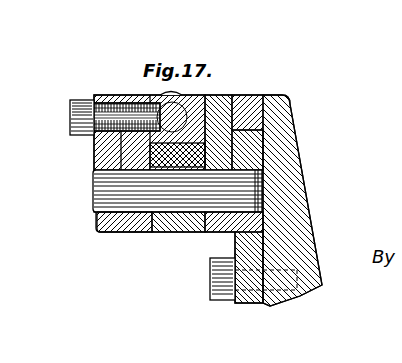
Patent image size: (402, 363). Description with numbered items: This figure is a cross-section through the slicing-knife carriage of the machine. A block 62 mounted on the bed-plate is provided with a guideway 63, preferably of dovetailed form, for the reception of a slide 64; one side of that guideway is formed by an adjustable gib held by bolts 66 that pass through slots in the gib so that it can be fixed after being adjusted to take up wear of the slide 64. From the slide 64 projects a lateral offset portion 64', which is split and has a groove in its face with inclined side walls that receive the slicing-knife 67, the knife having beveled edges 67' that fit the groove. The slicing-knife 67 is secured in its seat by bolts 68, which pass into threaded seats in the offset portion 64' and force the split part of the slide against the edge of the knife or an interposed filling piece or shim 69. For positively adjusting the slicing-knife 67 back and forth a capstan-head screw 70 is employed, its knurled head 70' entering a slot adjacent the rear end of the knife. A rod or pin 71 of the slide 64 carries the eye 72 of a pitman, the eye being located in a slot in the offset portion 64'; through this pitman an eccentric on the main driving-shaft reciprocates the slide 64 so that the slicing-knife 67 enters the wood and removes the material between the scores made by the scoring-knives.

The block 62 is at (305, 180).
The guideway 63 is at (263, 260).
The slide 64 is at (284, 143).
The lateral offset portion 64' is at (269, 100).
The bolts 66 is at (210, 282).
The slicing-knife 67 is at (127, 88).
The beveled edges 67' is at (166, 98).
The bolts 68 is at (70, 115).
The filling piece or shim 69 is at (114, 97).
The capstan-head screw 70 is at (162, 101).
The knurled head 70' is at (177, 60).
The rod or pin 71 is at (104, 182).
The eye 72 is at (153, 232).